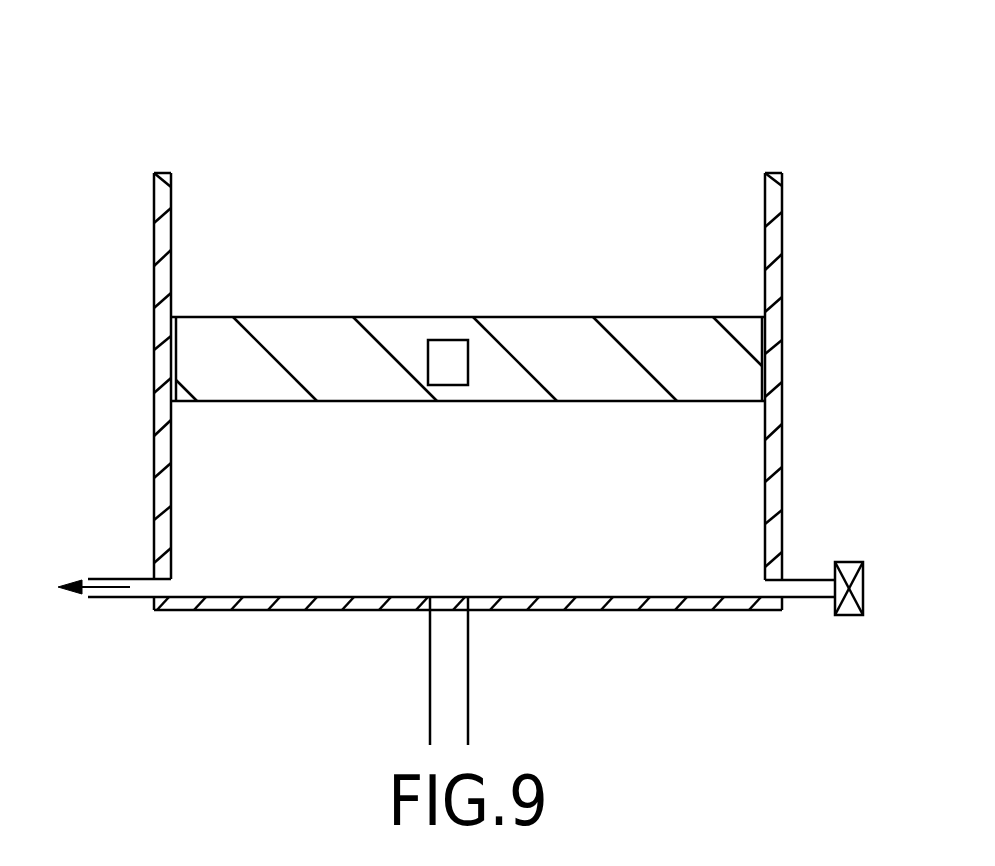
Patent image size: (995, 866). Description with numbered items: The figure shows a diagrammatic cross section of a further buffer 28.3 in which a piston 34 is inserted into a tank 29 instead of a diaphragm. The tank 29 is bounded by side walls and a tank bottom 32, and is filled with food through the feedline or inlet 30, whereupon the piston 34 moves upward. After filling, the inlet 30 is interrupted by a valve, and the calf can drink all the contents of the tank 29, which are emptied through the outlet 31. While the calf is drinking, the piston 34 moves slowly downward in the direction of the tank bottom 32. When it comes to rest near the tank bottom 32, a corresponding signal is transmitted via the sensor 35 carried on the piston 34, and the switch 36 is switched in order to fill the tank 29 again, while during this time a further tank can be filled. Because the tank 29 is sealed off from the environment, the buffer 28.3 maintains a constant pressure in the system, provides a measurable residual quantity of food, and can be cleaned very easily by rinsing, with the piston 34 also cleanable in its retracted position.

The buffer 28.3 is at (750, 95).
The tank 29 is at (800, 237).
The inlet 30 is at (814, 580).
The outlet 31 is at (112, 578).
The tank bottom 32 is at (280, 612).
The piston 34 is at (296, 342).
The sensor 35 is at (449, 358).
The switch 36 is at (456, 603).